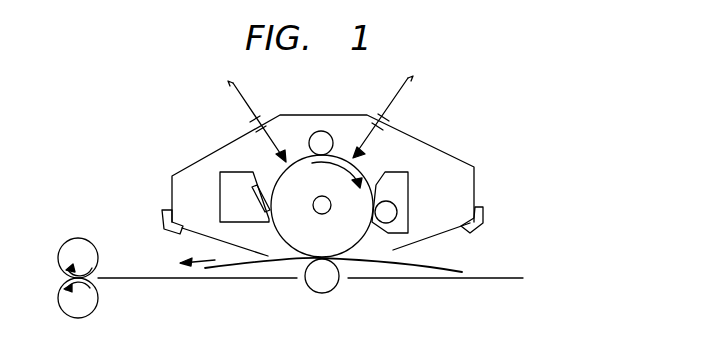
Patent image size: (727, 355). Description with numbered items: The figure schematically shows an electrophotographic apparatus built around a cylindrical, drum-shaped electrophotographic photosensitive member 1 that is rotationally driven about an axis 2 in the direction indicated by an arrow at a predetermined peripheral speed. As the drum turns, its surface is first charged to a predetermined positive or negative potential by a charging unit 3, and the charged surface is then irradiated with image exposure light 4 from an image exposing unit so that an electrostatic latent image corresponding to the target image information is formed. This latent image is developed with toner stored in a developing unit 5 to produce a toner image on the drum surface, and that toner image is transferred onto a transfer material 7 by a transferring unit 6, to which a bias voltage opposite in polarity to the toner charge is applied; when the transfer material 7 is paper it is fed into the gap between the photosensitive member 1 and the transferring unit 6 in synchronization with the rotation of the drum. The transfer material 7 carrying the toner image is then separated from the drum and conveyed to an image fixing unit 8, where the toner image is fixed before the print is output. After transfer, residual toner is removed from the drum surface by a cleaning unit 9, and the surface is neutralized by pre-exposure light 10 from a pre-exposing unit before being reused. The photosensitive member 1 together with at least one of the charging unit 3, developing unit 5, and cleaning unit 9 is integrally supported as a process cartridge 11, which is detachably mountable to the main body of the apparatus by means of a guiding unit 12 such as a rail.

The electrophotographic photosensitive member 1 is at (276, 176).
The axis 2 is at (321, 214).
The charging unit 3 is at (320, 131).
The image exposure light 4 is at (393, 101).
The developing unit 5 is at (409, 198).
The transferring unit 6 is at (321, 294).
The transfer material 7 is at (451, 268).
The image fixing unit 8 is at (81, 238).
The cleaning unit 9 is at (220, 192).
The pre-exposure light 10 is at (244, 105).
The process cartridge 11 is at (463, 160).
The guiding unit 12 is at (162, 213).